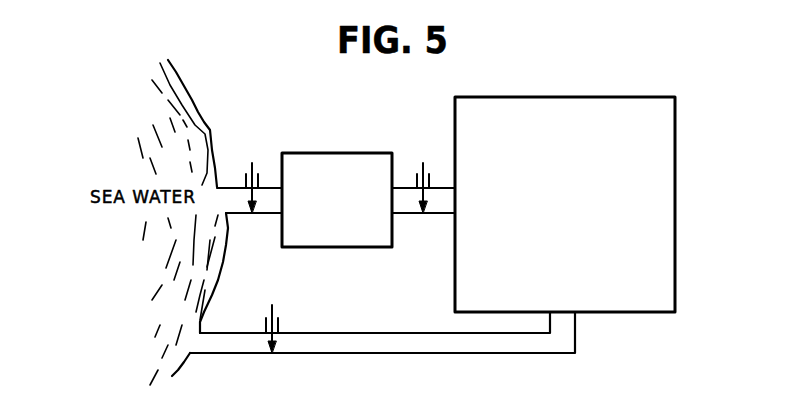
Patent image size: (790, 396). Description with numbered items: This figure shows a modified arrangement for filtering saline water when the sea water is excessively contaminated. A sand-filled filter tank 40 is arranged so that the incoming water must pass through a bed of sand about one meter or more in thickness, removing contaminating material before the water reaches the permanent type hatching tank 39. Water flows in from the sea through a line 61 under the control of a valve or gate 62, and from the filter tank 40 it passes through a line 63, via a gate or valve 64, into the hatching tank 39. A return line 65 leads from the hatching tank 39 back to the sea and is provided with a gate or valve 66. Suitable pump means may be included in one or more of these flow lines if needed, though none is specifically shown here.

The hatching tank 39 is at (565, 97).
The filter tank 40 is at (325, 153).
The line 61 is at (268, 214).
The valve or gate 62 is at (253, 162).
The line 63 is at (443, 214).
The gate or valve 64 is at (412, 164).
The return line 65 is at (375, 333).
The gate or valve 66 is at (274, 306).